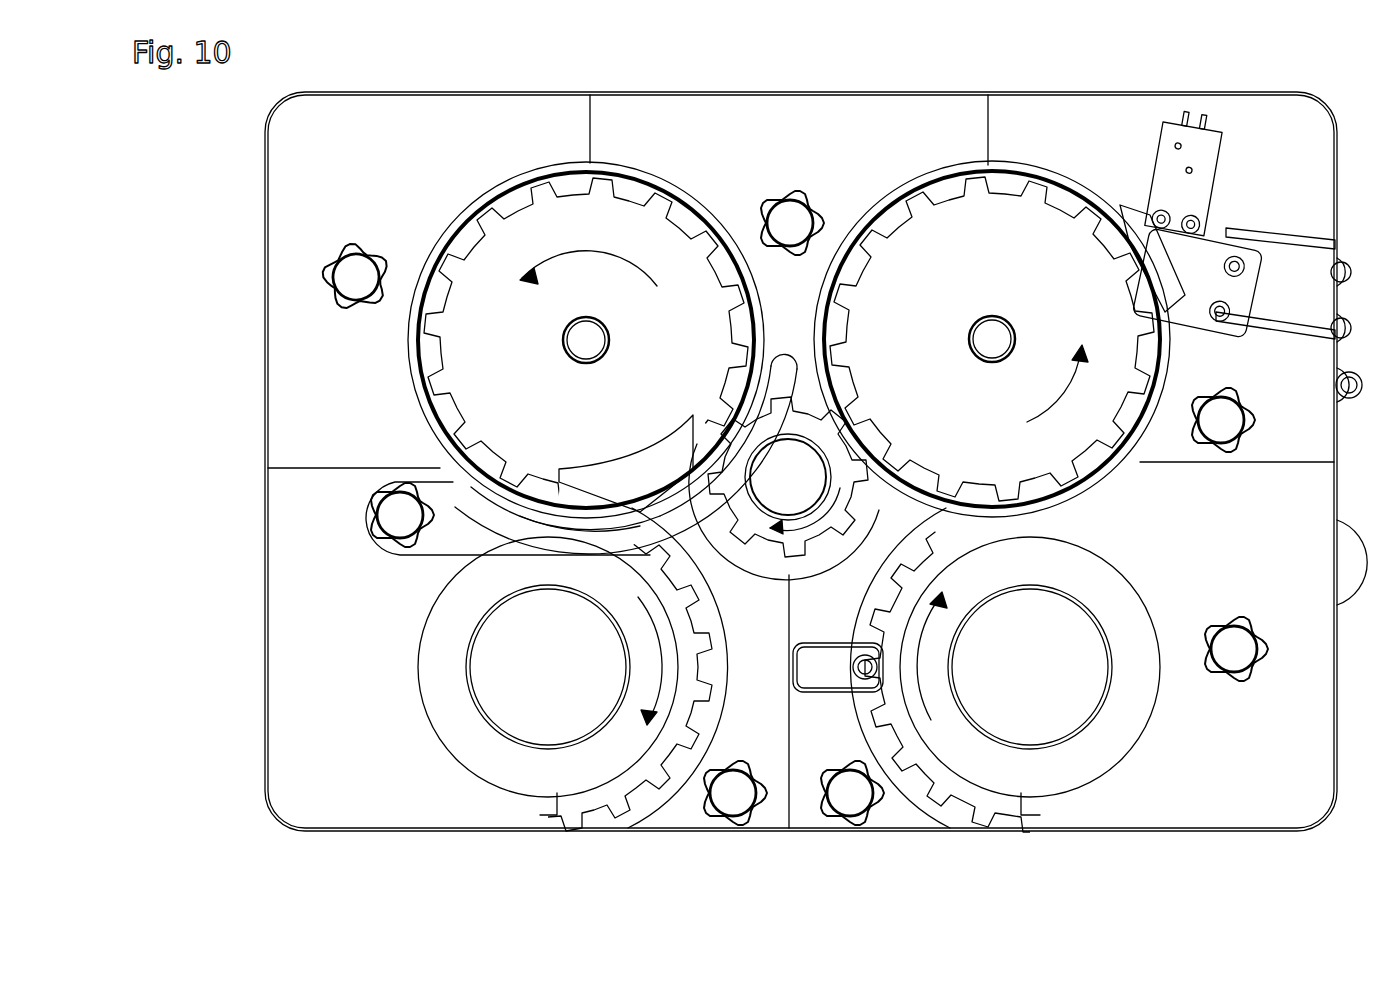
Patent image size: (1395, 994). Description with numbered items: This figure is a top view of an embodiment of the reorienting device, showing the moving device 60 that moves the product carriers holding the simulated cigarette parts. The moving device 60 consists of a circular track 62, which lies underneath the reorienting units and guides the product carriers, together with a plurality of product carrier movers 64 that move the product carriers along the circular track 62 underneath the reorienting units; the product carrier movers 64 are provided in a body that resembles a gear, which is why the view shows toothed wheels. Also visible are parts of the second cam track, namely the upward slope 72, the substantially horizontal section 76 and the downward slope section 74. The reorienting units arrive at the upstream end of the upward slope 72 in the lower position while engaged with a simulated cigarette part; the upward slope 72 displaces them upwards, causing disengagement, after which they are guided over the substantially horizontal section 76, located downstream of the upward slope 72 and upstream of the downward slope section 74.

The moving device 60 is at (372, 360).
The circular track 62 is at (428, 392).
The product carrier movers 64 is at (478, 446).
The upward slope 72 is at (490, 508).
The downward slope section 74 is at (762, 378).
The substantially horizontal section 76 is at (585, 527).